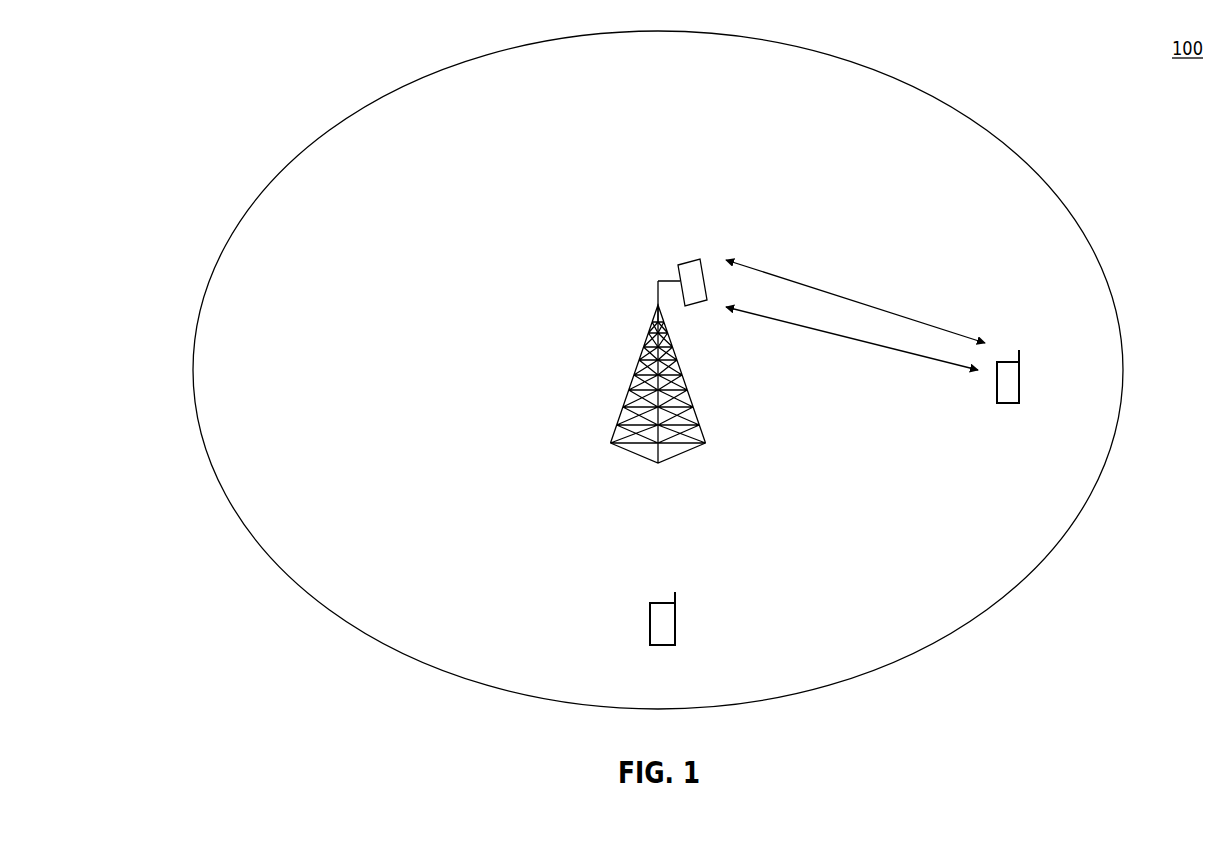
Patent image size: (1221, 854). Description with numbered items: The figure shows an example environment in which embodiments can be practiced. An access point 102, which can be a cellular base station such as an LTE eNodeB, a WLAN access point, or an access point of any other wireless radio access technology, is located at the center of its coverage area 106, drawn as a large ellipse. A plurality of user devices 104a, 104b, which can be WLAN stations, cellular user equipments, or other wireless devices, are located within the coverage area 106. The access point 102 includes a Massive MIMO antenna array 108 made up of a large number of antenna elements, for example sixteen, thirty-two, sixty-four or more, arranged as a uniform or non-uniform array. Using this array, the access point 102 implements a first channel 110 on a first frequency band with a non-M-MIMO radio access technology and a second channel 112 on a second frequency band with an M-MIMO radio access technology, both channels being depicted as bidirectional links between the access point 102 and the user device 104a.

The access point (AP) 102 is at (636, 373).
The user device 104a is at (1007, 404).
The user device 104b is at (677, 612).
The coverage area 106 is at (290, 160).
The M-MIMO antenna array 108 is at (704, 304).
The first channel 110 is at (870, 306).
The second channel 112 is at (858, 340).